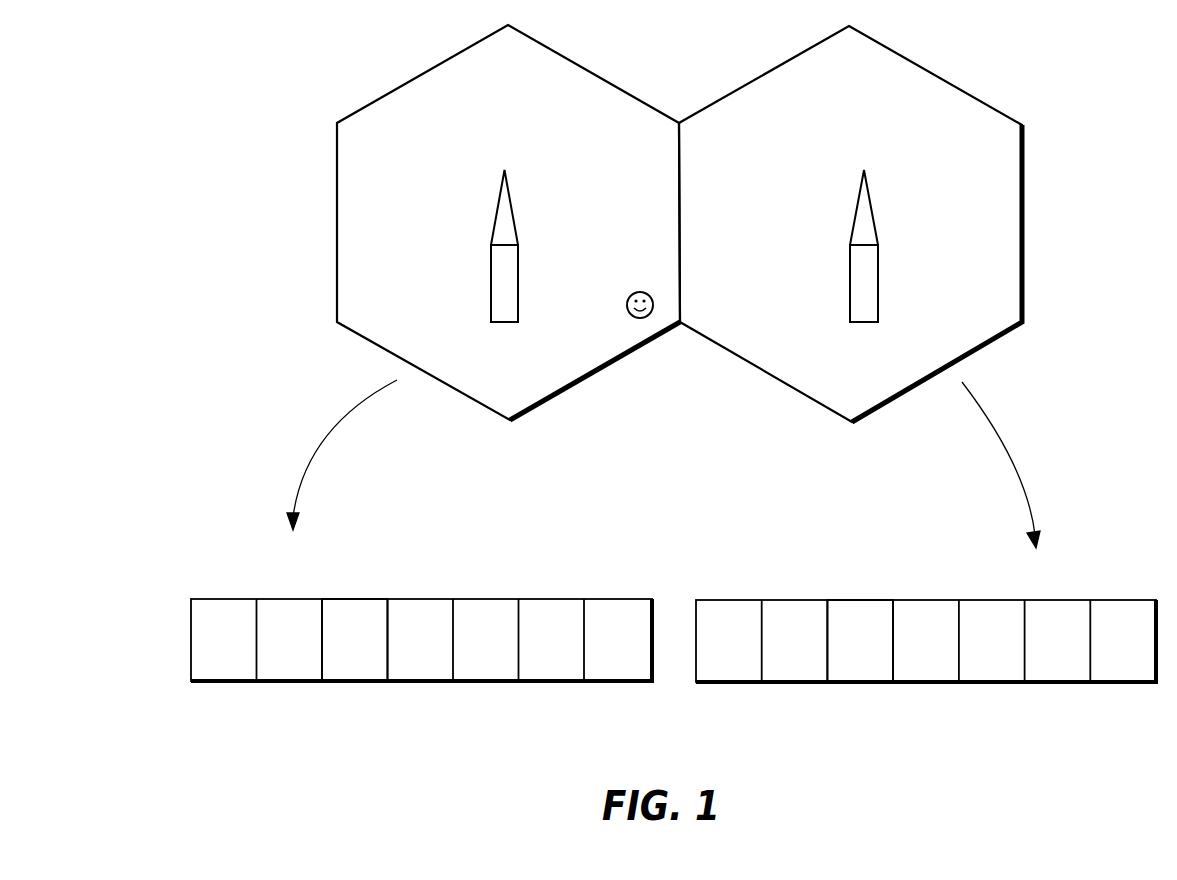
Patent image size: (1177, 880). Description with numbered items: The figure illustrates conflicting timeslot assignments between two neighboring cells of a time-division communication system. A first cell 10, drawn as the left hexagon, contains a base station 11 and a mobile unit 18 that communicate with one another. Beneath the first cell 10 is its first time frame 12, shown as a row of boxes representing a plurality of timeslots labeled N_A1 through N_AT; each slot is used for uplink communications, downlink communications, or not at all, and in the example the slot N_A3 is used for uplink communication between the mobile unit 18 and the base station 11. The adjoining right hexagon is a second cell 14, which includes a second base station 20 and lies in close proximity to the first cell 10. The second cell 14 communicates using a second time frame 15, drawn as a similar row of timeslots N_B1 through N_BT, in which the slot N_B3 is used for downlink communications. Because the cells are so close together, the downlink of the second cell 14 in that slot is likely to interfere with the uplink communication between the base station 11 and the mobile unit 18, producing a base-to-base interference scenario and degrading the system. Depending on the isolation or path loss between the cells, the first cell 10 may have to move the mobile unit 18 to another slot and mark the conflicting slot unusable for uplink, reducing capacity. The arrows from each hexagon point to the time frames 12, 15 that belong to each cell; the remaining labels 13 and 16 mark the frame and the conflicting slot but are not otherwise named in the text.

The first cell 10 is at (350, 117).
The base station 11 is at (491, 245).
The first time frame 12 is at (357, 685).
The neighbor list of cell A 13 is at (213, 599).
The second cell 14 is at (978, 98).
The second time frame 15 is at (723, 600).
The neighbor list entry 16 is at (870, 685).
The mobile unit 18 is at (647, 317).
The second base station 20 is at (878, 277).